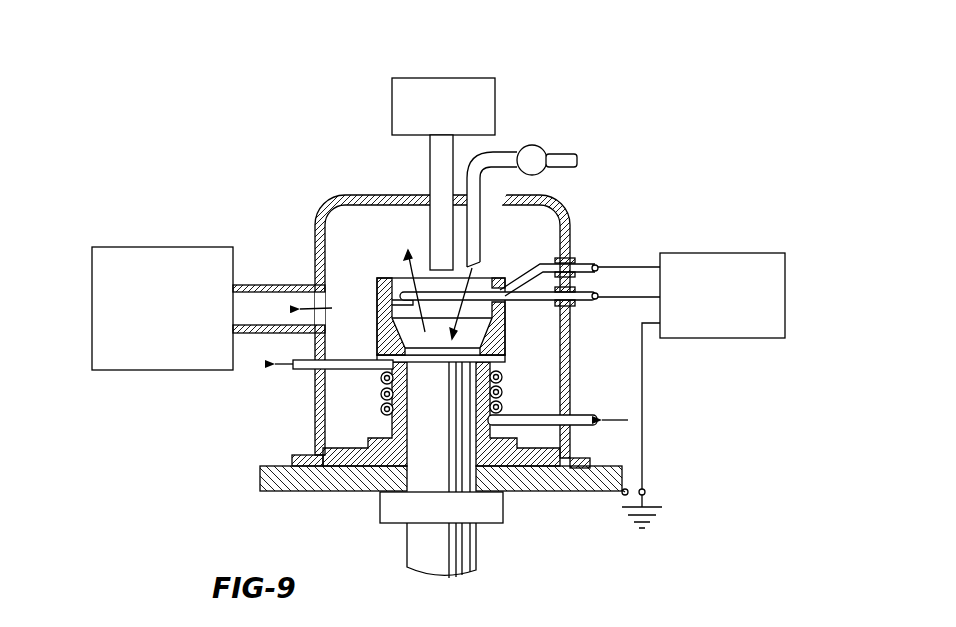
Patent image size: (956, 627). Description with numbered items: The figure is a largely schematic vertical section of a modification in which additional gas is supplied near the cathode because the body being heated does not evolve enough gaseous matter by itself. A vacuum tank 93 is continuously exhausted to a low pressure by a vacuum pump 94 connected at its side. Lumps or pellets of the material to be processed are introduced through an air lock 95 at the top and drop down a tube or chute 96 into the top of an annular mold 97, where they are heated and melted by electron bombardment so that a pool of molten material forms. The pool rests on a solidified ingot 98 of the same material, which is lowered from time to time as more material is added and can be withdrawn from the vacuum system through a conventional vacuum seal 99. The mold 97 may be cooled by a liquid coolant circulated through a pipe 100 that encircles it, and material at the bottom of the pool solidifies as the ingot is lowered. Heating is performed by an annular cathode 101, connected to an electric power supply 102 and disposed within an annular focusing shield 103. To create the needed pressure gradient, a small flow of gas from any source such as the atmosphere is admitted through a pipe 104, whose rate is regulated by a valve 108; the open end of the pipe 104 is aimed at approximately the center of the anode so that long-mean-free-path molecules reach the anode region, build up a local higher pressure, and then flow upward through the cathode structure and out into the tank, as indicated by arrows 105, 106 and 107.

The vacuum tank 93 is at (366, 198).
The vacuum pump 94 is at (188, 226).
The air lock 95 is at (492, 113).
The tube or chute 96 is at (436, 224).
The annular mold 97 is at (492, 368).
The solidified ingot 98 is at (477, 562).
The vacuum seal 99 is at (379, 508).
The pipe 100 is at (372, 360).
The annular cathode 101 is at (429, 304).
The electric power supply 102 is at (732, 242).
The annular focusing shield 103 is at (505, 342).
The pipe 104 is at (480, 260).
The arrow 105 is at (458, 316).
The arrow 106 is at (408, 268).
The arrow 107 is at (338, 308).
The valve 108 is at (536, 146).